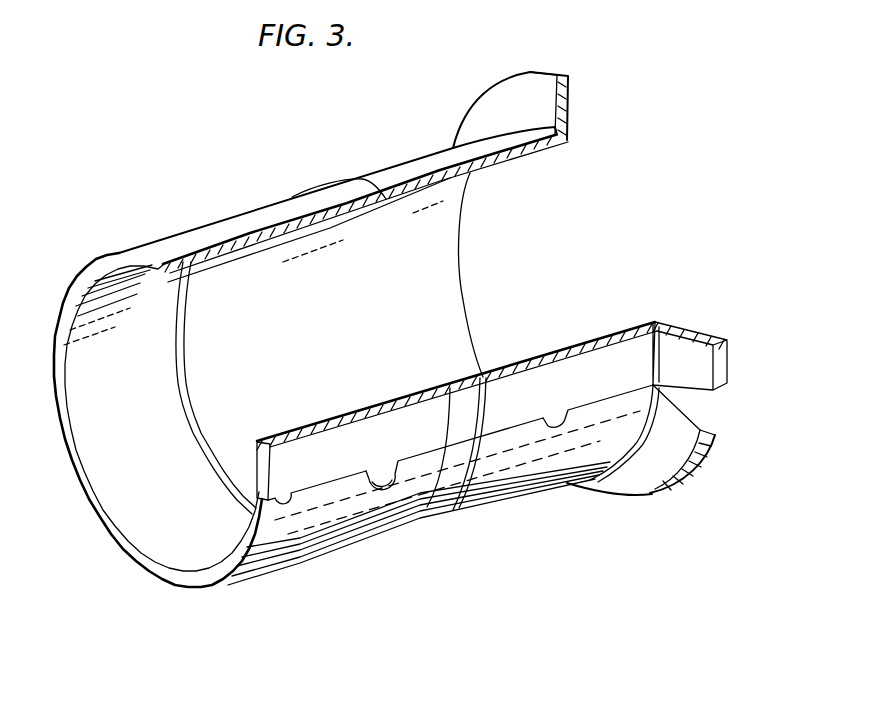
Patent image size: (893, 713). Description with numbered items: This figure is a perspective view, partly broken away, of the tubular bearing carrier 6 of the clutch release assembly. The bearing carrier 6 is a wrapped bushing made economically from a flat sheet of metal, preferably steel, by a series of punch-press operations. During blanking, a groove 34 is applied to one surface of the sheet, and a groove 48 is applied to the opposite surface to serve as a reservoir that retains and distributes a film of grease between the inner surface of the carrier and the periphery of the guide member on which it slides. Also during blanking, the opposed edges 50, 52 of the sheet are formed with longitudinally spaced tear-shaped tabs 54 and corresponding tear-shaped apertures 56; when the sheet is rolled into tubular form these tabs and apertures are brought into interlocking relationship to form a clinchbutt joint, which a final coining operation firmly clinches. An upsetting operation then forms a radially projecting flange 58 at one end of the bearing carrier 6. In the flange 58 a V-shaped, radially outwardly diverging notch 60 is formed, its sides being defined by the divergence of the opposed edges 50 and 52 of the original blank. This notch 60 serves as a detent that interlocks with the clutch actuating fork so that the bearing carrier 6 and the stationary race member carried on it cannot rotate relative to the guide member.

The tubular bearing carrier 6 is at (221, 212).
The groove 34 is at (466, 390).
The groove 48 is at (183, 390).
The opposed edge 50 is at (280, 500).
The opposed edge 52 is at (578, 399).
The tear-shaped tab 54 is at (386, 491).
The tear-shaped aperture 56 is at (364, 489).
The radially projecting flange 58 is at (630, 478).
The V-shaped notch 60 is at (702, 424).